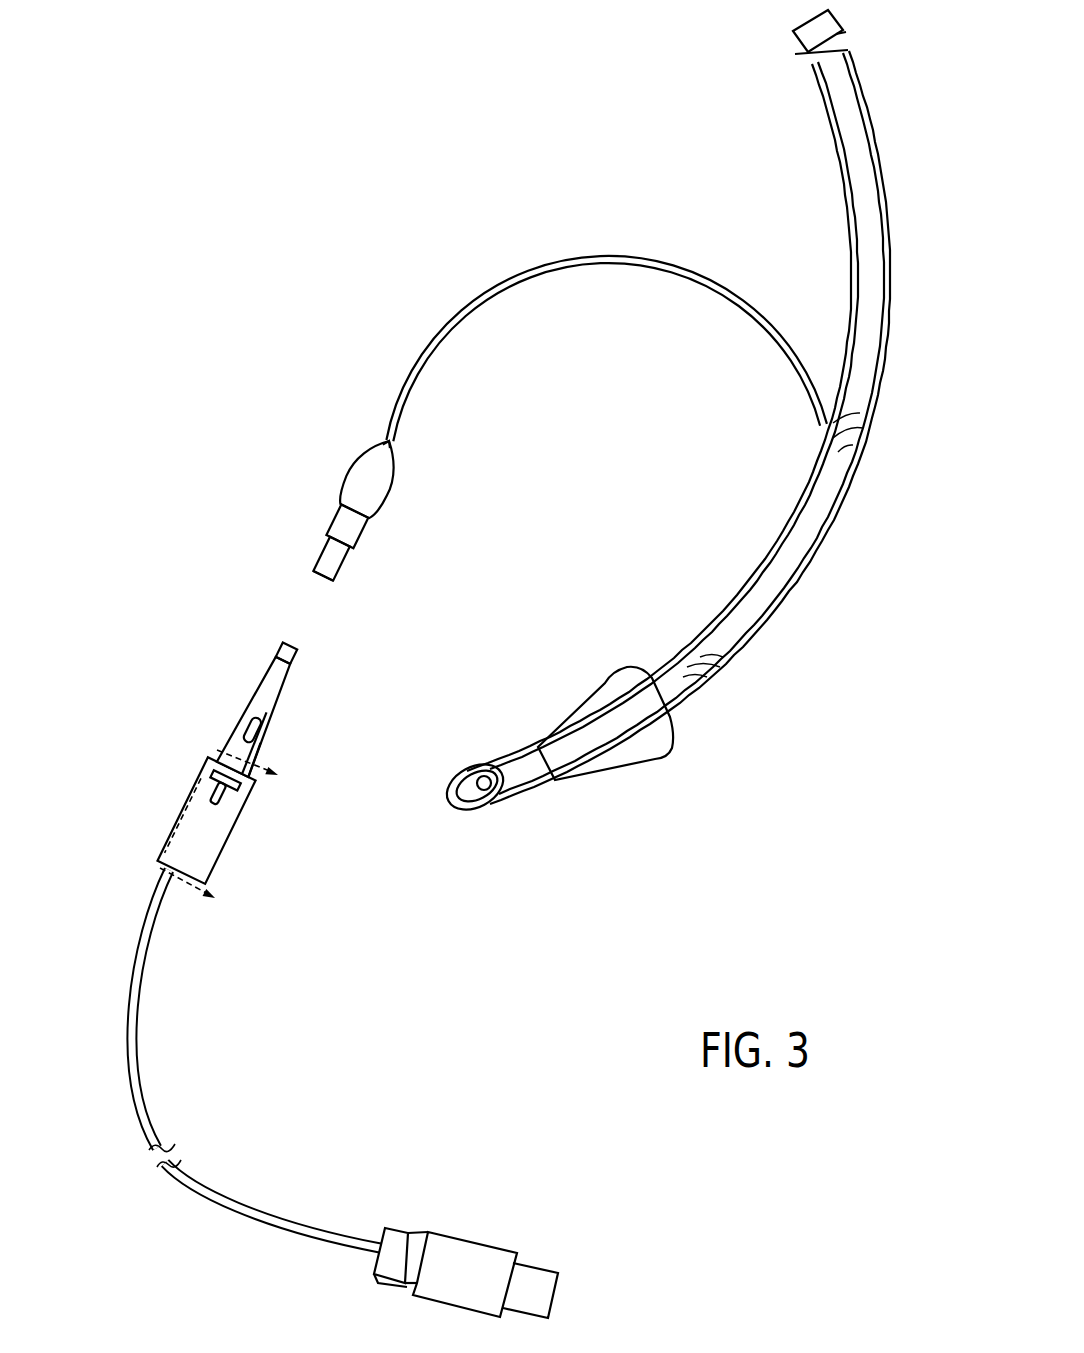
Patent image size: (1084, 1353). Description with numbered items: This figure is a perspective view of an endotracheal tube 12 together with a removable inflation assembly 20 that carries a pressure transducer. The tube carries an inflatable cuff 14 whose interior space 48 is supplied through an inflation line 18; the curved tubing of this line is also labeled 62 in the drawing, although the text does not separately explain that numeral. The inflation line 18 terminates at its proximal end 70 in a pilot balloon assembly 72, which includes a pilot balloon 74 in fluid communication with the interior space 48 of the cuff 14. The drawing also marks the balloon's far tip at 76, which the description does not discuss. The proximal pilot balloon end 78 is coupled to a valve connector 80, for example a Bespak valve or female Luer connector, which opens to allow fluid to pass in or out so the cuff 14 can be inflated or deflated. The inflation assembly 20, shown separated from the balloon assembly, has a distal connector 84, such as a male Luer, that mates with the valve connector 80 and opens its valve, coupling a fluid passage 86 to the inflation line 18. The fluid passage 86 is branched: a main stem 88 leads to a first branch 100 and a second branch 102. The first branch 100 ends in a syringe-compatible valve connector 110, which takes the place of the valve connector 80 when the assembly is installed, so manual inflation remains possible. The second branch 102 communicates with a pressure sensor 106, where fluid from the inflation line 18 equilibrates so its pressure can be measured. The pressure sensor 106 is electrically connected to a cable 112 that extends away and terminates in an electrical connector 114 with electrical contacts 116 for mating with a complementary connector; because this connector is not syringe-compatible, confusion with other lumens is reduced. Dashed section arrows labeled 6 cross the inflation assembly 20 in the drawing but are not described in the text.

The tracheal tube system 12 is at (634, 414).
The cuff 14 is at (668, 750).
The inflation line 18 is at (532, 441).
The inflation assembly 20 is at (375, 976).
The interior space 48 is at (600, 712).
The sensor lead 62 is at (432, 365).
The proximal end 70 is at (351, 511).
The pilot balloon assembly 72 is at (347, 527).
The pilot balloon 74 is at (371, 476).
The bulb tip 76 is at (388, 443).
The proximal pilot balloon end 78 is at (331, 559).
The valve connector 80 is at (323, 576).
The distal connector 84 is at (286, 652).
The fluid passage 86 is at (259, 715).
The main stem 88 is at (254, 743).
The first branch 100 is at (252, 730).
The second branch 102 is at (254, 760).
The pressure sensor 106 is at (206, 820).
The valve connector 110 is at (221, 790).
The cable 112 is at (160, 955).
The electrical connector 114 is at (484, 1243).
The electrical contacts 116 is at (560, 1292).
The section line 6- 6 is at (225, 836).